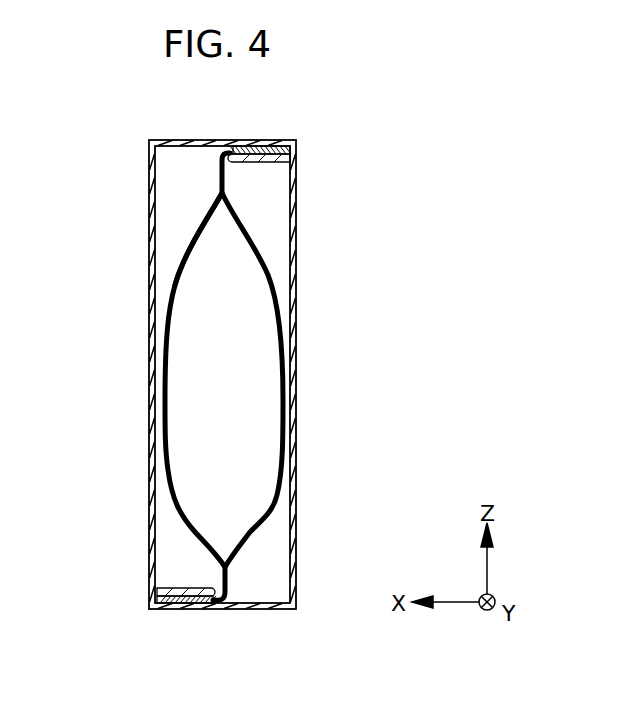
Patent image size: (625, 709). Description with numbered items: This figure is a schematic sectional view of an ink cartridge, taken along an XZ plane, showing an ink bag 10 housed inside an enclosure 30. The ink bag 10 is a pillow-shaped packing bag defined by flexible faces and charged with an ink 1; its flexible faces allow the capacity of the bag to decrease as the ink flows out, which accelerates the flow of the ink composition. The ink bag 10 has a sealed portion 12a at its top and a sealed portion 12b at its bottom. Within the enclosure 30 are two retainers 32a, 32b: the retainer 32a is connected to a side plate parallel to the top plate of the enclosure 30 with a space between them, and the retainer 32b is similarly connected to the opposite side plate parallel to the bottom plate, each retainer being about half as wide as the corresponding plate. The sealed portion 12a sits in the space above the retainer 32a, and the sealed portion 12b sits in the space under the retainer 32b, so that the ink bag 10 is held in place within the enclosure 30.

The ink 1 is at (265, 342).
The ink bag 10 is at (205, 223).
The sealed portion 12a is at (262, 140).
The sealed portion 12b is at (170, 604).
The enclosure 30 is at (153, 237).
The retainer 32a is at (275, 160).
The retainer 32b is at (187, 588).